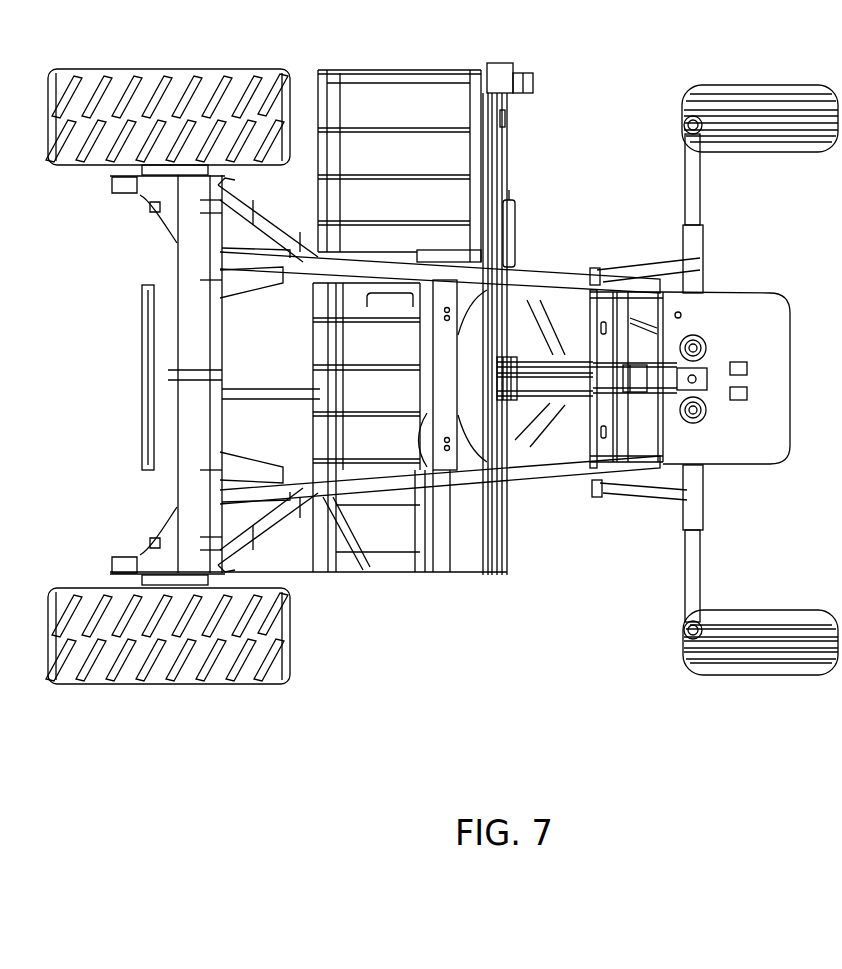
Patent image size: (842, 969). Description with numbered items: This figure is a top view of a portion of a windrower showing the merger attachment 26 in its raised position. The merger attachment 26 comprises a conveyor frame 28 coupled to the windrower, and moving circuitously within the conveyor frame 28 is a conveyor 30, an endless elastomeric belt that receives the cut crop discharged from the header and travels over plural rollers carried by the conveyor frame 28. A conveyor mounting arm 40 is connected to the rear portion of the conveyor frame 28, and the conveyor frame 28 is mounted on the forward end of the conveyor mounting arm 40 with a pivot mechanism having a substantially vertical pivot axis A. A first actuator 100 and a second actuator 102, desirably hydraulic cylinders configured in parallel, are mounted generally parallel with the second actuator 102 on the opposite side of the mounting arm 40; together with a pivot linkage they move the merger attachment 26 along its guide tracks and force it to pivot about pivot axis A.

The merger attachment 26 is at (567, 618).
The conveyor frame 28 is at (507, 148).
The conveyor 30 is at (420, 70).
The conveyor mounting arm 40 is at (627, 400).
The first actuator 100 is at (580, 400).
The second actuator 102 is at (578, 362).
The pivot axis A is at (515, 400).